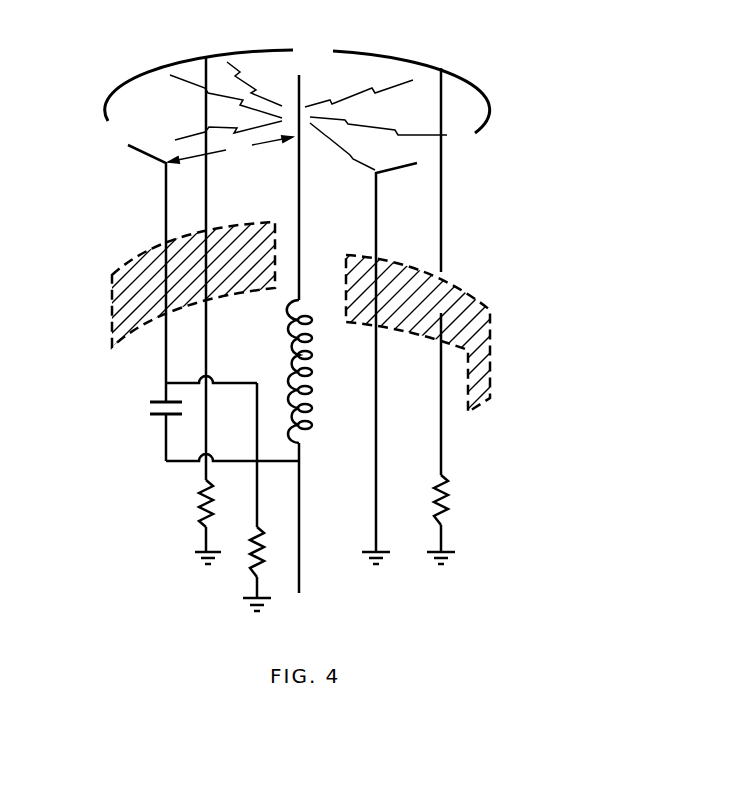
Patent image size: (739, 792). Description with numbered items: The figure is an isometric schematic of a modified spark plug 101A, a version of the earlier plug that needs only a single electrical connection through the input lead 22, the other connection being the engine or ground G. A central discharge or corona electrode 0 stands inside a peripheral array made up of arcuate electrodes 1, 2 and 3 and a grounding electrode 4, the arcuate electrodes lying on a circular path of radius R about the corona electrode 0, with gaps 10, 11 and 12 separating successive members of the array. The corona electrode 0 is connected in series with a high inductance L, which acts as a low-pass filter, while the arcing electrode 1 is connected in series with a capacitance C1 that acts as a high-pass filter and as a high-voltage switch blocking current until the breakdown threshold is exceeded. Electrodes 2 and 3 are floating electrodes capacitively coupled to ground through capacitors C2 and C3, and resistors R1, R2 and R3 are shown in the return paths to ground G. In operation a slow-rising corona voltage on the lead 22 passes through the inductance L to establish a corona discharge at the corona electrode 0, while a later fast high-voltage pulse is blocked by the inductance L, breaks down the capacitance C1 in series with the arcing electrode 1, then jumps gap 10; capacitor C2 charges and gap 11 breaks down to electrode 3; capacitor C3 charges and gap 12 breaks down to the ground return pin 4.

The spark plug 101A is at (498, 142).
The gap 10 is at (277, 245).
The arcuate electrode 2 is at (199, 245).
The arcuate electrode 3 is at (411, 72).
The arcing electrode 1 is at (141, 264).
The central discharge electrode 0 is at (327, 154).
The gap 11 is at (308, 85).
The radius R is at (230, 150).
The grounding electrode 4 is at (396, 357).
The gap 12 is at (458, 271).
The capacitor C2 is at (197, 282).
The capacitor C3 is at (417, 332).
The inductance L is at (317, 371).
The input lead 22 is at (252, 518).
The capacitance C1 is at (190, 418).
The resistor R2 is at (222, 512).
The resistor R1 is at (271, 490).
The resistor R3 is at (462, 513).
The ground G is at (313, 595).